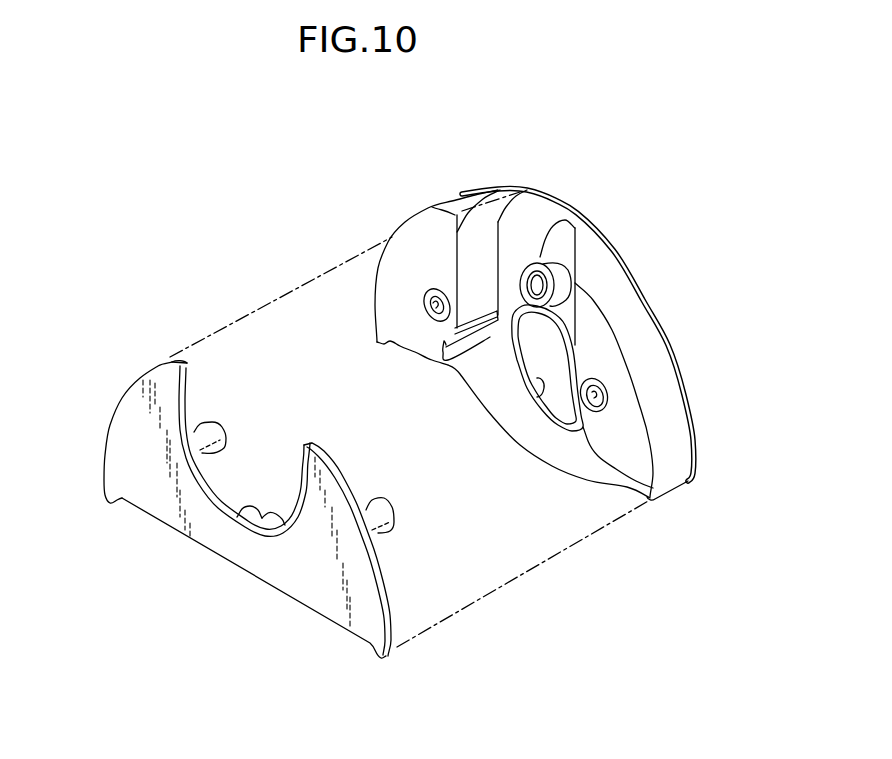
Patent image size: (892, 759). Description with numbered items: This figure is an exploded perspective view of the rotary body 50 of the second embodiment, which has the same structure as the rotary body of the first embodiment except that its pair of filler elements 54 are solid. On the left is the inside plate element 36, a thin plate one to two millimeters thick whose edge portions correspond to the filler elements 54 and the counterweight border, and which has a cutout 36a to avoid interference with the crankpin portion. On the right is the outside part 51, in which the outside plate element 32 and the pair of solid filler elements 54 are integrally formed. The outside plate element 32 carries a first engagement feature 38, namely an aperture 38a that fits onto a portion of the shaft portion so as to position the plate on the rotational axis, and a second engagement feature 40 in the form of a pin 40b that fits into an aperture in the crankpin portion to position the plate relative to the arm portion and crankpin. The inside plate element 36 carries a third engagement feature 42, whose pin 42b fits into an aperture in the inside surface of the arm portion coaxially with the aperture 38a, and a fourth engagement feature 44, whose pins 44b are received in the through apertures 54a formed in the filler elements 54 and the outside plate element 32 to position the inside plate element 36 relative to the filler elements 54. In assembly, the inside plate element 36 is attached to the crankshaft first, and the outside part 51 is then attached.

The rotary body 50 is at (275, 258).
The outside part 51 is at (457, 188).
The filler elements 54 is at (430, 203).
The through apertures 54a is at (428, 311).
The outside plate element 32 is at (534, 225).
The pin 40b is at (541, 256).
The second engagement feature 40 is at (606, 239).
The aperture 38a is at (543, 397).
The first engagement feature 38 is at (533, 409).
The inside plate element 36 is at (112, 402).
The cutout 36a is at (196, 400).
The pins 44b is at (226, 440).
The fourth engagement feature 44 is at (323, 461).
The pin 42b is at (227, 520).
The third engagement feature 42 is at (216, 566).